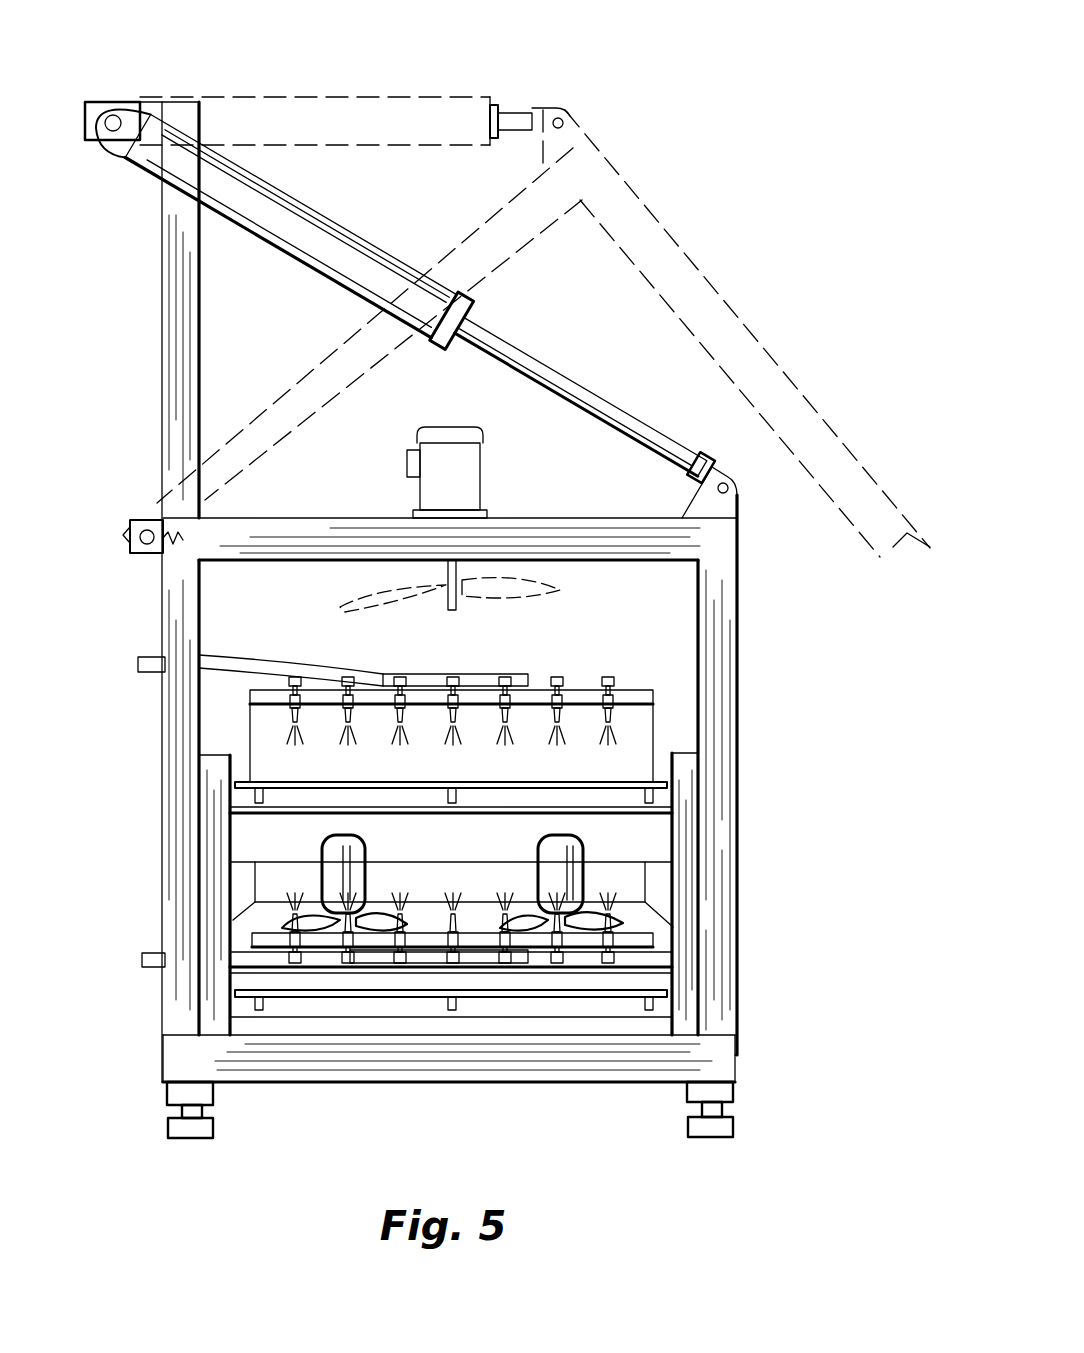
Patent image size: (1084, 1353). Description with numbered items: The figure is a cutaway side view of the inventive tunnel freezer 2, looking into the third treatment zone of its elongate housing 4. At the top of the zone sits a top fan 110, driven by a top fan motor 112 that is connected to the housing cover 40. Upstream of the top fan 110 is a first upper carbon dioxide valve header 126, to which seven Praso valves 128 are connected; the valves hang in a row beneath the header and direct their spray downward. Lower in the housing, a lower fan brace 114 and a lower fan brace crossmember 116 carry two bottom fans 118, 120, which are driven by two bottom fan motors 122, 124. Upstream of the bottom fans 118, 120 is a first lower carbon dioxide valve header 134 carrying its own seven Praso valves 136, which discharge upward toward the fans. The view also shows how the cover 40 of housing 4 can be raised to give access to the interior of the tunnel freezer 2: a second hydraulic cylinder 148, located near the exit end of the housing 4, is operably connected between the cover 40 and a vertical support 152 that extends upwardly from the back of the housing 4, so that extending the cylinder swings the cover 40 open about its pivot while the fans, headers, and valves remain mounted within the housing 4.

The tunnel freezer 2 is at (660, 158).
The elongate housing 4 is at (293, 520).
The housing cover 40 is at (703, 268).
The top fan 110 is at (340, 607).
The top fan motor 112 is at (482, 474).
The lower fan brace 114 is at (640, 882).
The lower fan brace crossmember 116 is at (557, 938).
The bottom fan 118 is at (590, 916).
The bottom fan 120 is at (315, 918).
The bottom fan motor 122 is at (553, 857).
The bottom fan motor 124 is at (347, 850).
The first upper CO2 valve header 126 is at (574, 694).
The Praso valves 128 is at (560, 677).
The first lower carbon dioxide valve header 134 is at (647, 937).
The Praso valves 136 is at (352, 963).
The second hydraulic cylinder 148 is at (300, 216).
The vertical support 152 is at (178, 276).